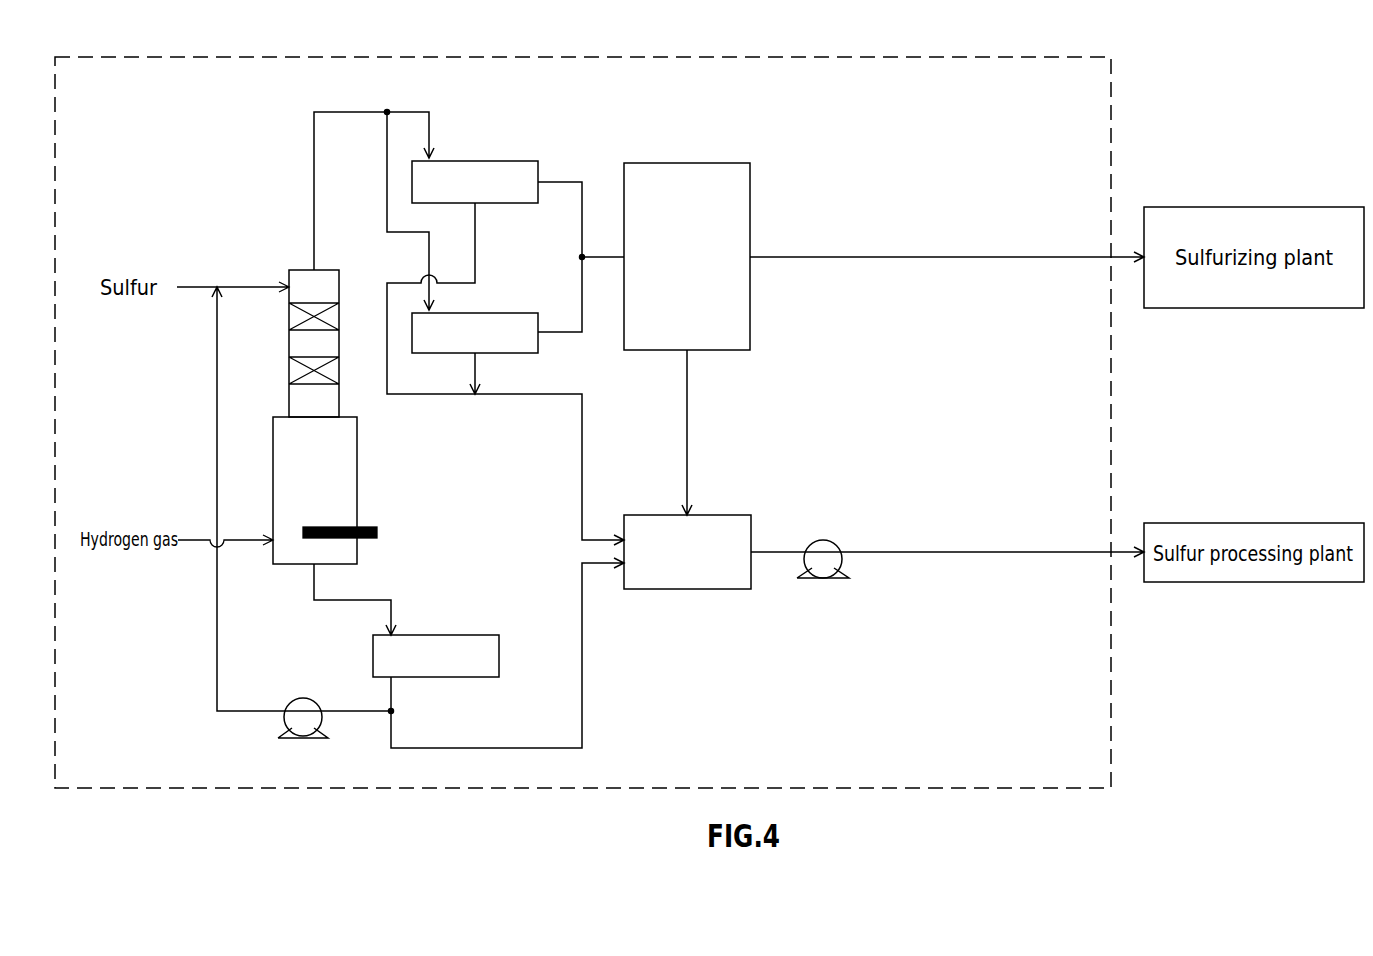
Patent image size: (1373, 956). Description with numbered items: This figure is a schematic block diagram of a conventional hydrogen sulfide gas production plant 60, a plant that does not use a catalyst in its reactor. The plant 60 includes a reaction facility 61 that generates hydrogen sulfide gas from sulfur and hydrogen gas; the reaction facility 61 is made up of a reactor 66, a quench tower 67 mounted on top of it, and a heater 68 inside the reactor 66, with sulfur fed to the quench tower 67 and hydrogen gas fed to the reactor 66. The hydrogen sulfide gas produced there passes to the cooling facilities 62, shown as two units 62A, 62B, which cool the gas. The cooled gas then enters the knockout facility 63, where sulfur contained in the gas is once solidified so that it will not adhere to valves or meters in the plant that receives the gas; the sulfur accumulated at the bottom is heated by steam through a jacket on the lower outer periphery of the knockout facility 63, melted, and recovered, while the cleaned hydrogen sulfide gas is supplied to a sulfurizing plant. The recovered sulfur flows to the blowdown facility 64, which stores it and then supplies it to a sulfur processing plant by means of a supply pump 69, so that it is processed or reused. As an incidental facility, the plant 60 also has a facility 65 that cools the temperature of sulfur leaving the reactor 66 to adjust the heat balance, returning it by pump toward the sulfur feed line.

The hydrogen sulfide gas production plant 60 is at (1058, 88).
The reaction facility 61 is at (341, 417).
The cooling facilities 62 is at (480, 212).
The cooling facility 62A is at (518, 161).
The cooling facility 62B is at (518, 313).
The knockout facility 63 is at (687, 163).
The blowdown facility 64 is at (724, 515).
The facility that cools the temperature of sulfur 65 is at (465, 635).
The reactor 66 is at (357, 481).
The quench tower 67 is at (289, 343).
The heater 68 is at (377, 532).
The supply pump 69 is at (825, 540).